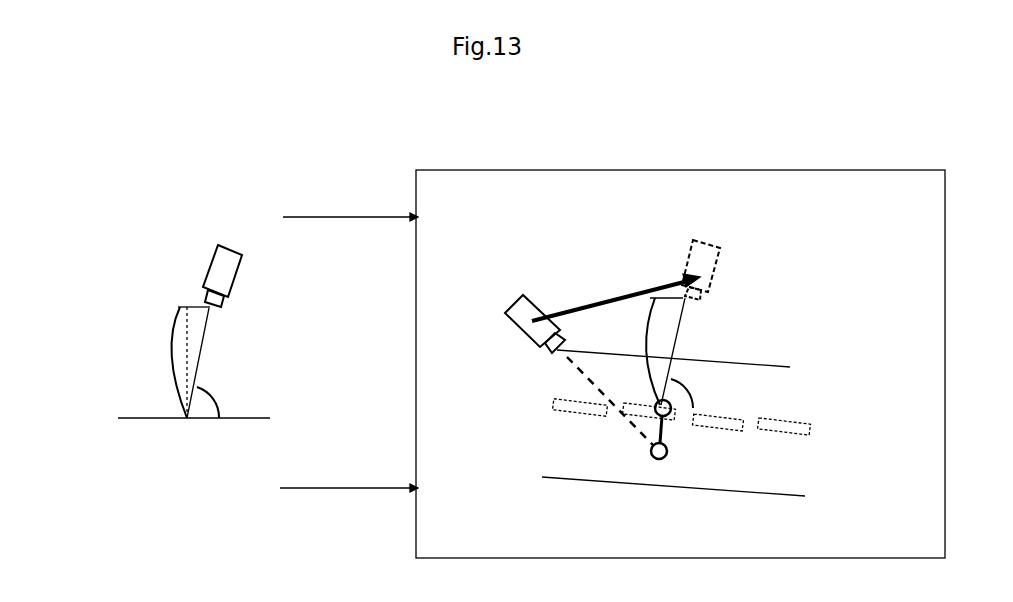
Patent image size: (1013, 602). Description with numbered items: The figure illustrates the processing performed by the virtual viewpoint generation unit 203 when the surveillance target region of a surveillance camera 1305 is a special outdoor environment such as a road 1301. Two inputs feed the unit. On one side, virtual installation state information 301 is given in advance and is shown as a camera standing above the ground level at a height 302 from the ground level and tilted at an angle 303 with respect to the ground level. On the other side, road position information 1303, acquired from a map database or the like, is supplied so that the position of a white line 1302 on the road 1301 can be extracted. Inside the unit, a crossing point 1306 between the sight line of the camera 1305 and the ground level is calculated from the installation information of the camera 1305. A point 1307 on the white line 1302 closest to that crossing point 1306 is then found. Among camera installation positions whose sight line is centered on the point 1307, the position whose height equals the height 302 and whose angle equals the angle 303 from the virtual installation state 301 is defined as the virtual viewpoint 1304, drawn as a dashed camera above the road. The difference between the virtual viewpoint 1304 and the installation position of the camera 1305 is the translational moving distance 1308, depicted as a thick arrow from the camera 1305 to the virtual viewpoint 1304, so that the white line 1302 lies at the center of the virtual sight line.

The virtual viewpoint generation unit 203 is at (680, 352).
The virtual installation state information 301 is at (187, 202).
The height from the ground level 302 is at (171, 352).
The angle with respect to the ground level 303 is at (220, 405).
The road 1301 is at (590, 480).
The white line 1302 is at (777, 425).
The road position information 1303 is at (117, 503).
The virtual viewpoint 1304 is at (718, 265).
The surveillance camera 1305 is at (512, 303).
The crossing point 1306 is at (670, 455).
The point on the white line 1307 is at (673, 412).
The translational moving distance 1308 is at (627, 293).